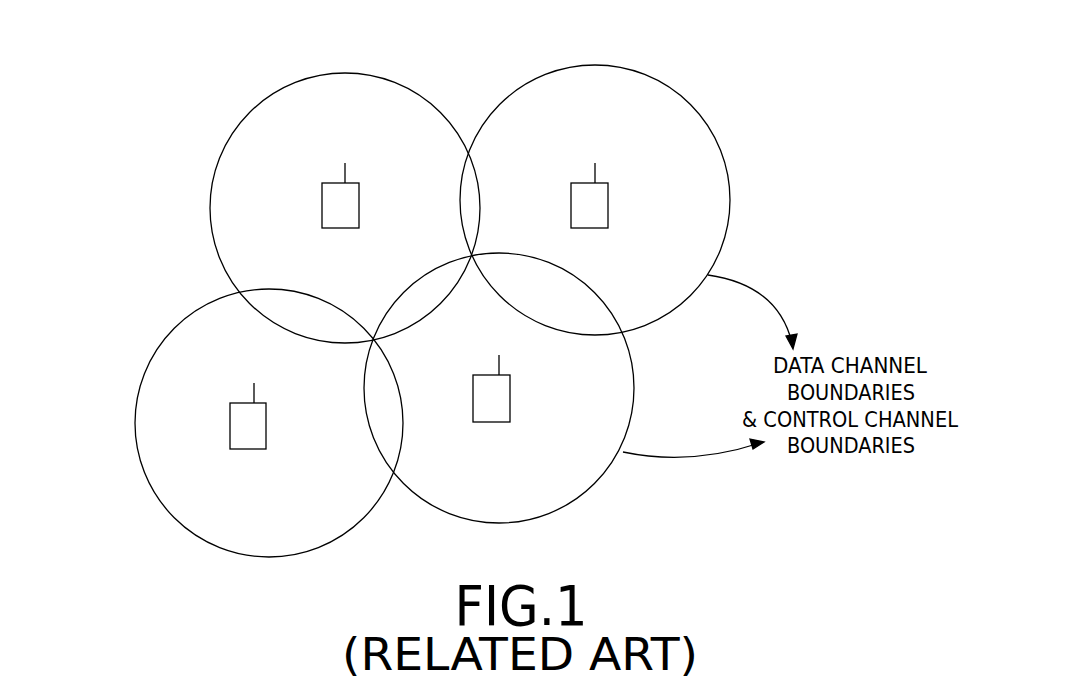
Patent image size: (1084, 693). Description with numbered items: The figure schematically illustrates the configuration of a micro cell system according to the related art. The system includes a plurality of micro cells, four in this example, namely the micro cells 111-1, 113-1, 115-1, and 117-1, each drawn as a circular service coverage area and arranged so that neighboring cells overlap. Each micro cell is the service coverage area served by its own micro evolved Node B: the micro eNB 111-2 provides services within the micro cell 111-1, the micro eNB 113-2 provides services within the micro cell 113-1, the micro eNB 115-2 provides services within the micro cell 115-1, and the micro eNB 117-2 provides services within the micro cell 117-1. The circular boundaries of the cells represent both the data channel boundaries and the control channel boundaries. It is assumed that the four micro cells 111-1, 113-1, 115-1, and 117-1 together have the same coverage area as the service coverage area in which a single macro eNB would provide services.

The micro cell 111-1 is at (345, 73).
The micro evolved Node B (eNB) 111-2 is at (359, 205).
The micro cell 113-1 is at (595, 64).
The micro eNB 113-2 is at (608, 205).
The micro cell 115-1 is at (636, 387).
The micro eNB 115-2 is at (510, 398).
The micro cell 117-1 is at (135, 423).
The micro eNB 117-2 is at (267, 427).